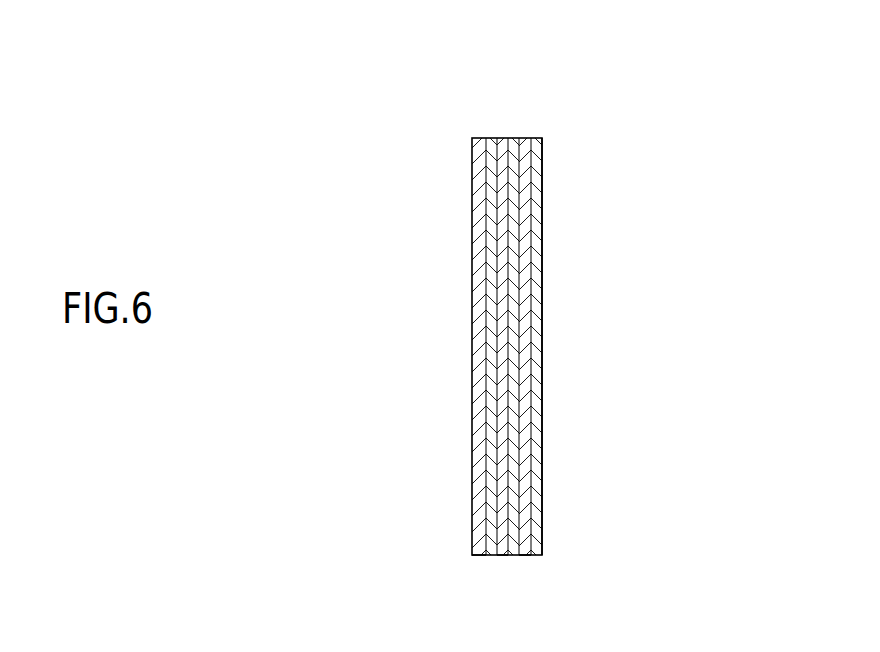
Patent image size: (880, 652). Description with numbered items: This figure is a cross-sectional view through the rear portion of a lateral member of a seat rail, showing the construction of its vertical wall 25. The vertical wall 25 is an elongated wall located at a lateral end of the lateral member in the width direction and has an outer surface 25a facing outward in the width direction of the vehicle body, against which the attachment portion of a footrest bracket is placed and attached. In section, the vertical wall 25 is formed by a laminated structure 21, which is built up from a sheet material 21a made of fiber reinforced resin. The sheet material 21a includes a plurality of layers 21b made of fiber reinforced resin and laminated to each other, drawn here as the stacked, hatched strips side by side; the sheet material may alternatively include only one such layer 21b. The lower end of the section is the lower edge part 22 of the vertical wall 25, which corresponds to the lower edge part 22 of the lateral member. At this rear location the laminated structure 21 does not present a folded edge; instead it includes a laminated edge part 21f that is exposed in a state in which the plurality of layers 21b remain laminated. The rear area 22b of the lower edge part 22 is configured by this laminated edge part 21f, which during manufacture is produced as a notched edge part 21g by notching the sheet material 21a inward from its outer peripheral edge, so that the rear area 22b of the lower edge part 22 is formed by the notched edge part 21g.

The laminated structure 21 is at (543, 325).
The sheet material 21a is at (657, 22).
The layers 21b is at (512, 138).
The laminated edge part 21f is at (482, 556).
The notched edge part 21g is at (522, 556).
The lower edge part 22 is at (538, 556).
The rear area 22b is at (505, 556).
The vertical wall 25 is at (543, 395).
The outer surface 25a is at (543, 258).